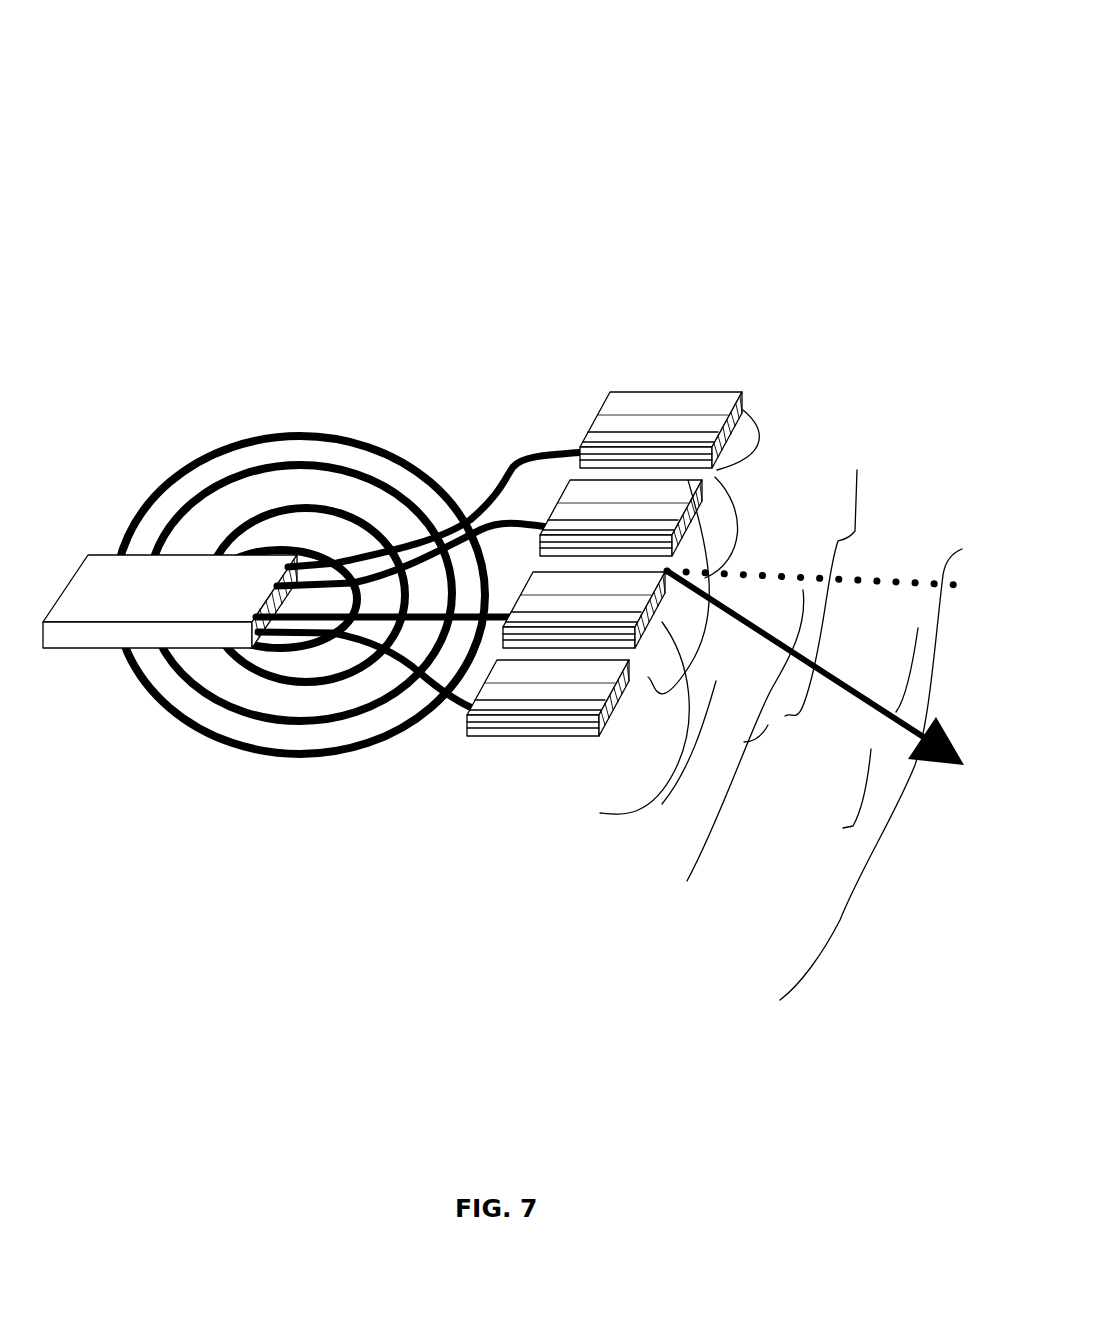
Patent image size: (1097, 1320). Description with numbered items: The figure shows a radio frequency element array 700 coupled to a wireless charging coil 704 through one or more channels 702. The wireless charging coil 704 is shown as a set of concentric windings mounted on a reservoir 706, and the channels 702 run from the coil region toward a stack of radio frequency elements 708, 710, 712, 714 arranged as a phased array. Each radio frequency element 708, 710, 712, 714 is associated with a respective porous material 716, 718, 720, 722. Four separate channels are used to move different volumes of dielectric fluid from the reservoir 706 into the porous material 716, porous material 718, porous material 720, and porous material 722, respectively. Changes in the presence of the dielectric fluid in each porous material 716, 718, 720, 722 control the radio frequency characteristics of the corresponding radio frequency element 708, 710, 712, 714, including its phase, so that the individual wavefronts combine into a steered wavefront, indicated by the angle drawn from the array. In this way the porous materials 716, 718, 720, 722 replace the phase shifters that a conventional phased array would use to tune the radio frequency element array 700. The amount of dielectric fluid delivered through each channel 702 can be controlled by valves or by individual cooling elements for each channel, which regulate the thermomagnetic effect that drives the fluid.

The radio frequency element array 700 is at (883, 66).
The channels 702 is at (523, 457).
The wireless charging coil 704 is at (318, 432).
The reservoir 706 is at (103, 648).
The radio frequency element 708 is at (625, 500).
The radio frequency element 710 is at (552, 597).
The radio frequency element 712 is at (497, 677).
The radio frequency element 714 is at (650, 410).
The porous material 716 is at (653, 540).
The porous material 718 is at (622, 633).
The porous material 720 is at (547, 733).
The porous material 722 is at (698, 450).